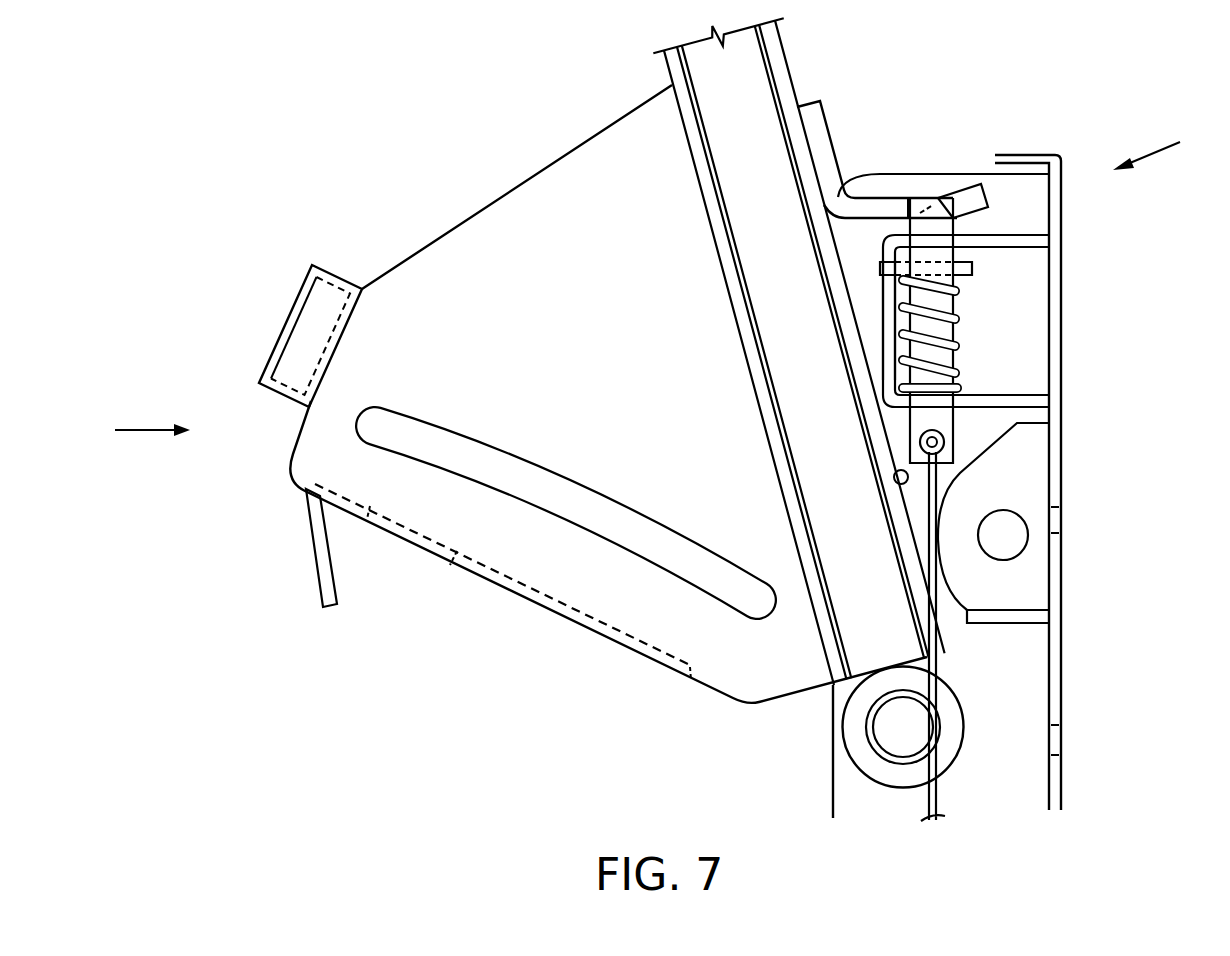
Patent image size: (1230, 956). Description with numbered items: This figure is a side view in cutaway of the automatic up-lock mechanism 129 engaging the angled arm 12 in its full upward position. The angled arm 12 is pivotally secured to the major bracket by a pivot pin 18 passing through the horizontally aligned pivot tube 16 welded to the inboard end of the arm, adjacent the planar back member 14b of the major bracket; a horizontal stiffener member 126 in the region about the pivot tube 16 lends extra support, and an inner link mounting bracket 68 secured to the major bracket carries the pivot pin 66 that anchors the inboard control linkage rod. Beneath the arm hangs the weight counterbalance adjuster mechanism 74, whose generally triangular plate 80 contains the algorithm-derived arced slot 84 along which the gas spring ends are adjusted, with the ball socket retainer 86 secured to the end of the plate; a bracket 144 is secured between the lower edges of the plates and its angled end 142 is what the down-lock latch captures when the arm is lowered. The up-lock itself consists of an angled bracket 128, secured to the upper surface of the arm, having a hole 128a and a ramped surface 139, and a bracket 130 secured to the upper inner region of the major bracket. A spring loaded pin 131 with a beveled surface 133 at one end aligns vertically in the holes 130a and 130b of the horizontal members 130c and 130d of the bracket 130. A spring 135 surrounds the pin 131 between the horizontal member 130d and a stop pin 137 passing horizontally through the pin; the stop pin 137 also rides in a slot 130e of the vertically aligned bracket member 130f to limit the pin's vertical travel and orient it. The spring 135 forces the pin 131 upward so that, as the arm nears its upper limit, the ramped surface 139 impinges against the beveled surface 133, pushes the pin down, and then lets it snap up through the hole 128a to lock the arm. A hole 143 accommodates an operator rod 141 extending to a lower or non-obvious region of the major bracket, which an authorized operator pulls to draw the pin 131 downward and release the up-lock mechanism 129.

The angled arm 12 is at (767, 210).
The planar back member 14b is at (1057, 400).
The pivot tube 16 is at (948, 727).
The pivot pin 18 is at (898, 718).
The pivot pin 66 is at (990, 547).
The inner link mounting bracket 68 is at (1032, 484).
The weight counterbalance adjuster mechanism 74 is at (130, 430).
The plate 80 is at (584, 354).
The arced slot 84 is at (523, 448).
The ball socket retainer 86 is at (328, 283).
The horizontal stiffener member 126 is at (997, 617).
The angled bracket 128 is at (813, 123).
The hole 128a is at (907, 205).
The automatic up-lock mechanism 129 is at (1171, 150).
The bracket 130 is at (1037, 237).
The hole 130a is at (953, 239).
The hole 130b is at (953, 397).
The horizontal member 130c is at (1007, 240).
The horizontal member 130d is at (1017, 405).
The slot 130e is at (890, 303).
The vertically aligned bracket member 130f is at (890, 340).
The spring loaded pin 131 is at (943, 330).
The beveled surface 133 is at (951, 197).
The spring 135 is at (950, 322).
The stop pin 137 is at (967, 266).
The ramped surface 139 is at (975, 188).
The operator rod 141 is at (937, 800).
The angled end 142 is at (321, 560).
The hole 143 is at (940, 435).
The bracket 144 is at (455, 558).